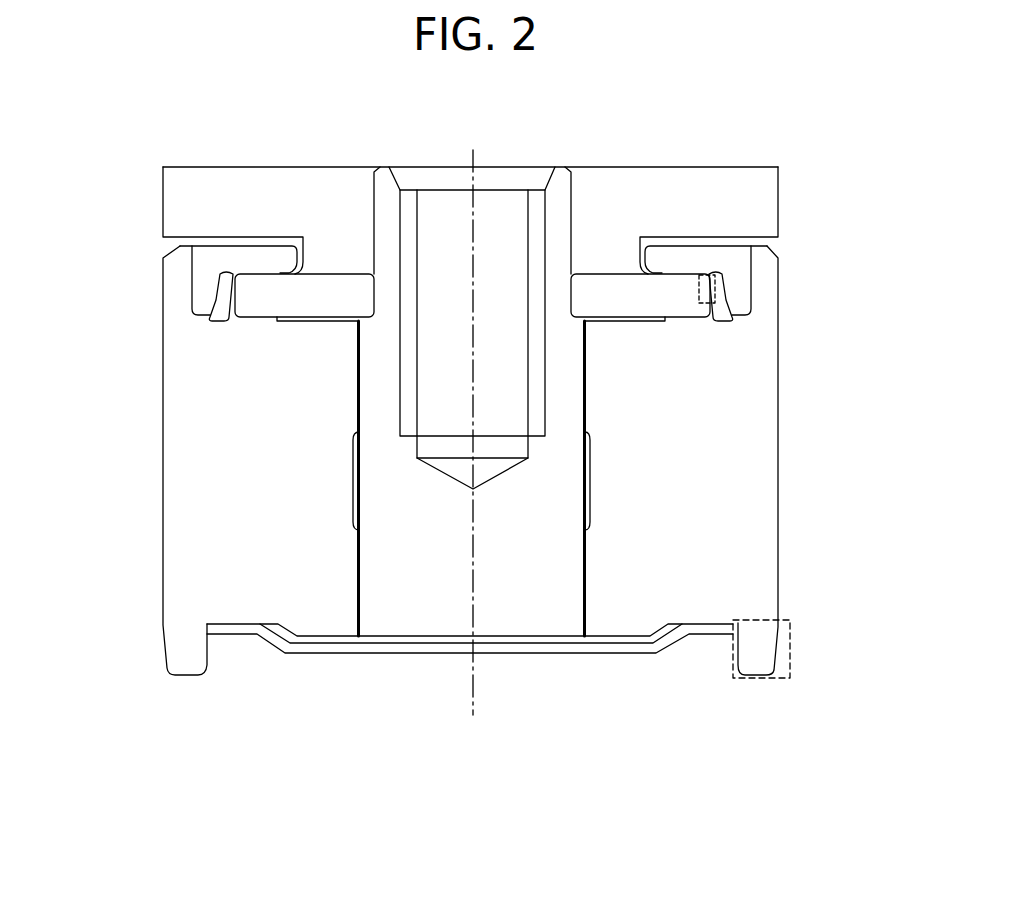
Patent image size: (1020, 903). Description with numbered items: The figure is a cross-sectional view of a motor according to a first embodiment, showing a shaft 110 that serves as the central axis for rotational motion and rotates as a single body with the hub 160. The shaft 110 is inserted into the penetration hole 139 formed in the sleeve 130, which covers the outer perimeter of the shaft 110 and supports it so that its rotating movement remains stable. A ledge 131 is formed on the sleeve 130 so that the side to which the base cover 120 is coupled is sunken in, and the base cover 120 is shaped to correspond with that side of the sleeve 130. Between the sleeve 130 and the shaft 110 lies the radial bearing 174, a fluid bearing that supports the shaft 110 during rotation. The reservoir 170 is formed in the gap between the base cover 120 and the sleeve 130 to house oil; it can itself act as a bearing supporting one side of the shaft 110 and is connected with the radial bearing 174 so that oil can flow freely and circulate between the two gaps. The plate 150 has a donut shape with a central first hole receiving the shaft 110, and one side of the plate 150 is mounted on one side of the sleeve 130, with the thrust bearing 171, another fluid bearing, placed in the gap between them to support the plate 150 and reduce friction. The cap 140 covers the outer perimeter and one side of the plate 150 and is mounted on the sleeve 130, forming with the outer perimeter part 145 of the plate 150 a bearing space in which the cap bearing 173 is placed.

The shaft 110 is at (370, 572).
The base cover 120 is at (625, 652).
The sleeve 130 is at (752, 435).
The ledge 131 is at (742, 678).
The penetration hole 139 is at (357, 378).
The cap 140 is at (738, 280).
The outer perimeter part 145 is at (718, 302).
The plate 150 is at (606, 290).
The hub 160 is at (737, 180).
The reservoir 170 is at (359, 640).
The thrust bearing 171 is at (632, 321).
The cap bearing 173 is at (727, 273).
The radial bearing 174 is at (357, 477).